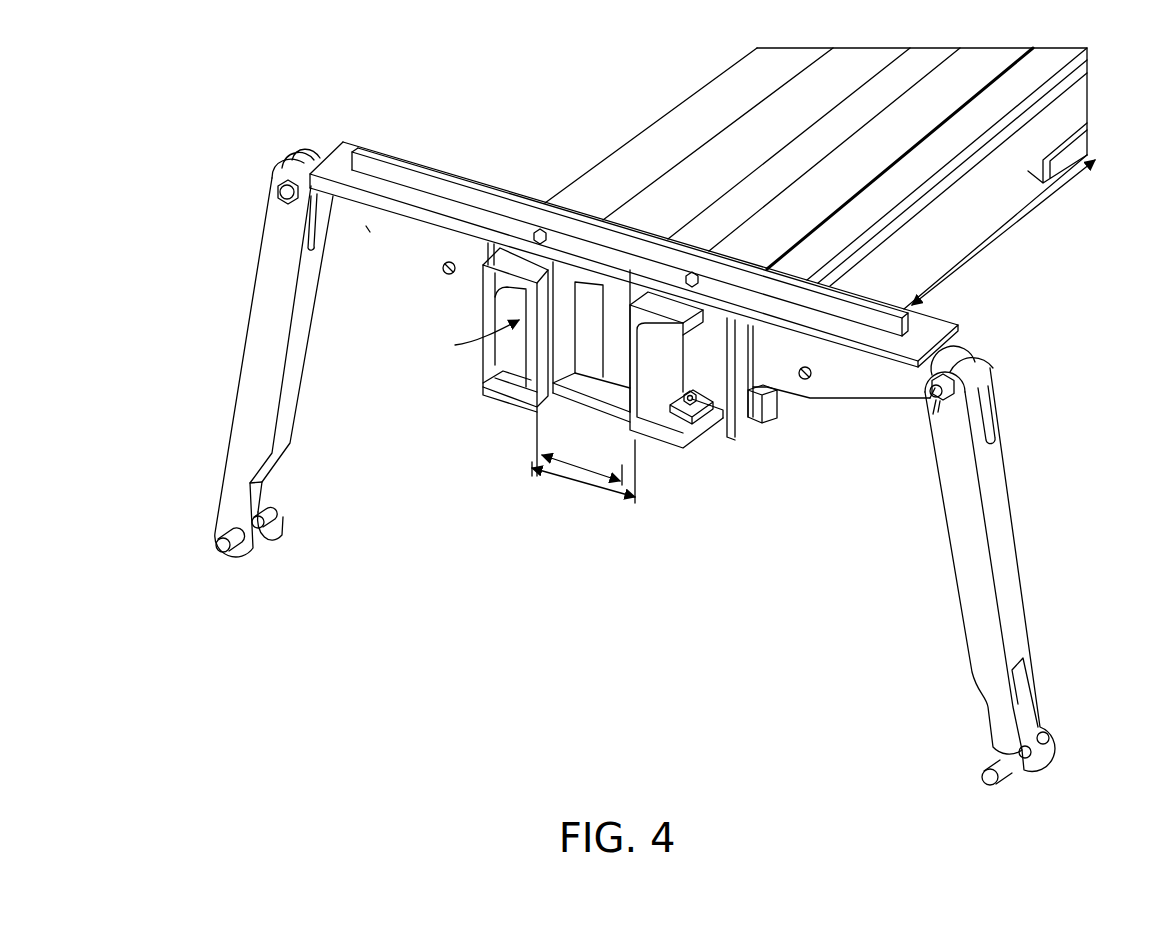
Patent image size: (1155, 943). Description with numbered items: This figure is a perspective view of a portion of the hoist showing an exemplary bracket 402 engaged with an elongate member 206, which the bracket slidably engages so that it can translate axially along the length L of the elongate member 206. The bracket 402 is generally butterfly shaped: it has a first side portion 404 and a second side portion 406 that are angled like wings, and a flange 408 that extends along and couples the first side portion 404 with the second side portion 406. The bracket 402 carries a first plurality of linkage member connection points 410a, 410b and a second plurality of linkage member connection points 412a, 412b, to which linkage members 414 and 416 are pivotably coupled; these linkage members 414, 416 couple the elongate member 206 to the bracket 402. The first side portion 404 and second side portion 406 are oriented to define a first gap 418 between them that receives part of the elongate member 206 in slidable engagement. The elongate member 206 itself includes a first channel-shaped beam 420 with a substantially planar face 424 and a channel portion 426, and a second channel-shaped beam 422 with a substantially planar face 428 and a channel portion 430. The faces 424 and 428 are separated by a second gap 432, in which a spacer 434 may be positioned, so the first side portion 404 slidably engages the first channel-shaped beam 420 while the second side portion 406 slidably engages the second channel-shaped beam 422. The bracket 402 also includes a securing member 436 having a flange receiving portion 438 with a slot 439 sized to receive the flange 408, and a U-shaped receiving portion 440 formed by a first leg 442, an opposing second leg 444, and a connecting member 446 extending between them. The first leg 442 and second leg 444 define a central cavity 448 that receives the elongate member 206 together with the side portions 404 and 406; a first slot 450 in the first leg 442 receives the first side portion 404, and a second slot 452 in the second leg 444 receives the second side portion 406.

The elongate member 206 is at (752, 57).
The length L is at (1030, 213).
The bracket 402 is at (565, 263).
The first side portion 404 is at (392, 251).
The second side portion 406 is at (902, 400).
The flange 408 is at (380, 152).
The first plurality of linkage member connection points 410a is at (305, 165).
The first plurality of linkage member connection points 410b is at (443, 273).
The second plurality of linkage member connection points 412a is at (950, 352).
The second plurality of linkage member connection points 412b is at (852, 370).
The linkage member 414 is at (235, 329).
The linkage member 416 is at (978, 530).
The first gap 418 is at (583, 478).
The first channel-shaped beam 420 is at (487, 268).
The second channel-shaped beam 422 is at (663, 303).
The substantially planar face 424 is at (583, 321).
The channel portion 426 is at (527, 385).
The substantially planar face 428 is at (732, 272).
The channel portion 430 is at (692, 401).
The second gap 432 is at (581, 446).
The spacer 434 is at (559, 399).
The securing member 436 is at (490, 243).
The flange receiving portion 438 is at (484, 302).
The slot 439 is at (368, 229).
The U-shaped receiving portion 440 is at (720, 426).
The first leg 442 is at (484, 366).
The second leg 444 is at (773, 402).
The connecting member 446 is at (700, 443).
The central cavity 448 is at (522, 352).
The first slot 450 is at (461, 341).
The second slot 452 is at (753, 420).